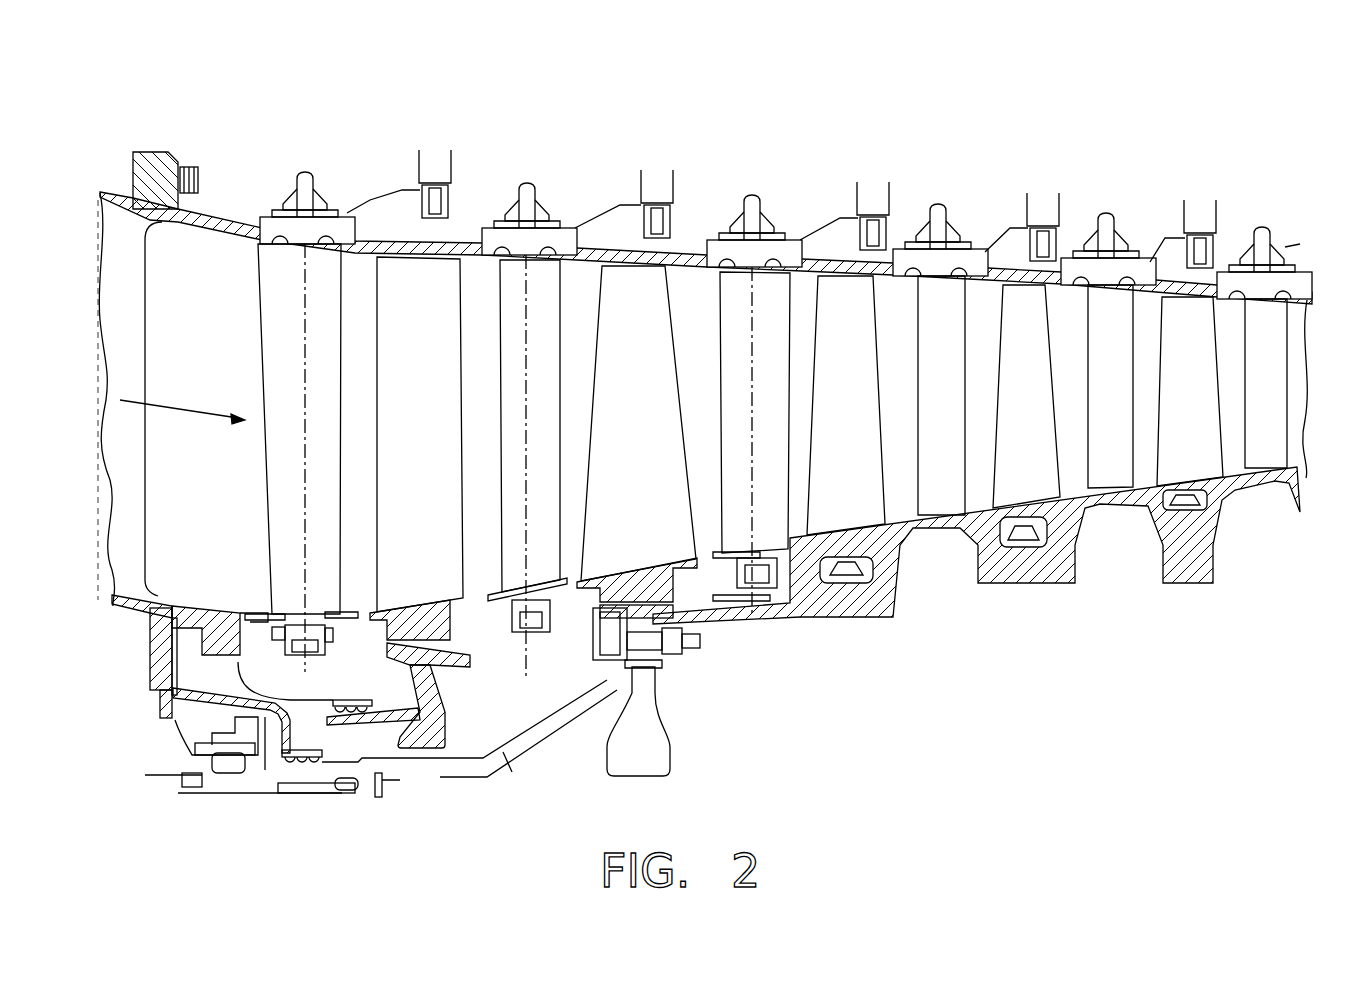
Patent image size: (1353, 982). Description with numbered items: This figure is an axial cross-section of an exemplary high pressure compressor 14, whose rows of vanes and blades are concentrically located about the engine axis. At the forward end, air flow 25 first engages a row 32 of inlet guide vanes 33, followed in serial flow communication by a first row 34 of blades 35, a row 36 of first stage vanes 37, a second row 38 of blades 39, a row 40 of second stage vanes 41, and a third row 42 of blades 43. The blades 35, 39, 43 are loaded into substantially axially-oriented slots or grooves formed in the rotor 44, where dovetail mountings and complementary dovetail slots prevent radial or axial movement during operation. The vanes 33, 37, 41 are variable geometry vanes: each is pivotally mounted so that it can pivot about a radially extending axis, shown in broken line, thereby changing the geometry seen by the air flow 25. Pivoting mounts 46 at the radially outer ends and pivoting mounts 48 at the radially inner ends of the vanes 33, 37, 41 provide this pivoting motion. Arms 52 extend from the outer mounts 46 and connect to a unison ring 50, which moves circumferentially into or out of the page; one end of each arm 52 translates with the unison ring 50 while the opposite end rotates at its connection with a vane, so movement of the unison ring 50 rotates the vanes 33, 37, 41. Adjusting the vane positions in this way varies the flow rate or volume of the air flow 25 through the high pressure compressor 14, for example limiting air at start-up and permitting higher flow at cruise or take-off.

The high pressure compressor 14 is at (1000, 122).
The air flow 25 is at (178, 402).
The row of inlet guide vanes 32 is at (745, 373).
The inlet guide vanes 33 is at (318, 409).
The first row of blades 34 is at (562, 401).
The blades 35 is at (423, 482).
The row of first stage vanes 36 is at (574, 225).
The first stage vanes 37 is at (540, 412).
The second row of blades 38 is at (688, 238).
The blades 39 is at (646, 429).
The row of second stage vanes 40 is at (799, 367).
The second stage vanes 41 is at (766, 429).
The third row of blades 42 is at (902, 243).
The blades 43 is at (846, 405).
The rotor 44 is at (740, 728).
The pivoting mounts 46 is at (262, 195).
The pivoting mounts 48 is at (342, 635).
The unison ring 50 is at (437, 150).
The arms 52 is at (357, 203).